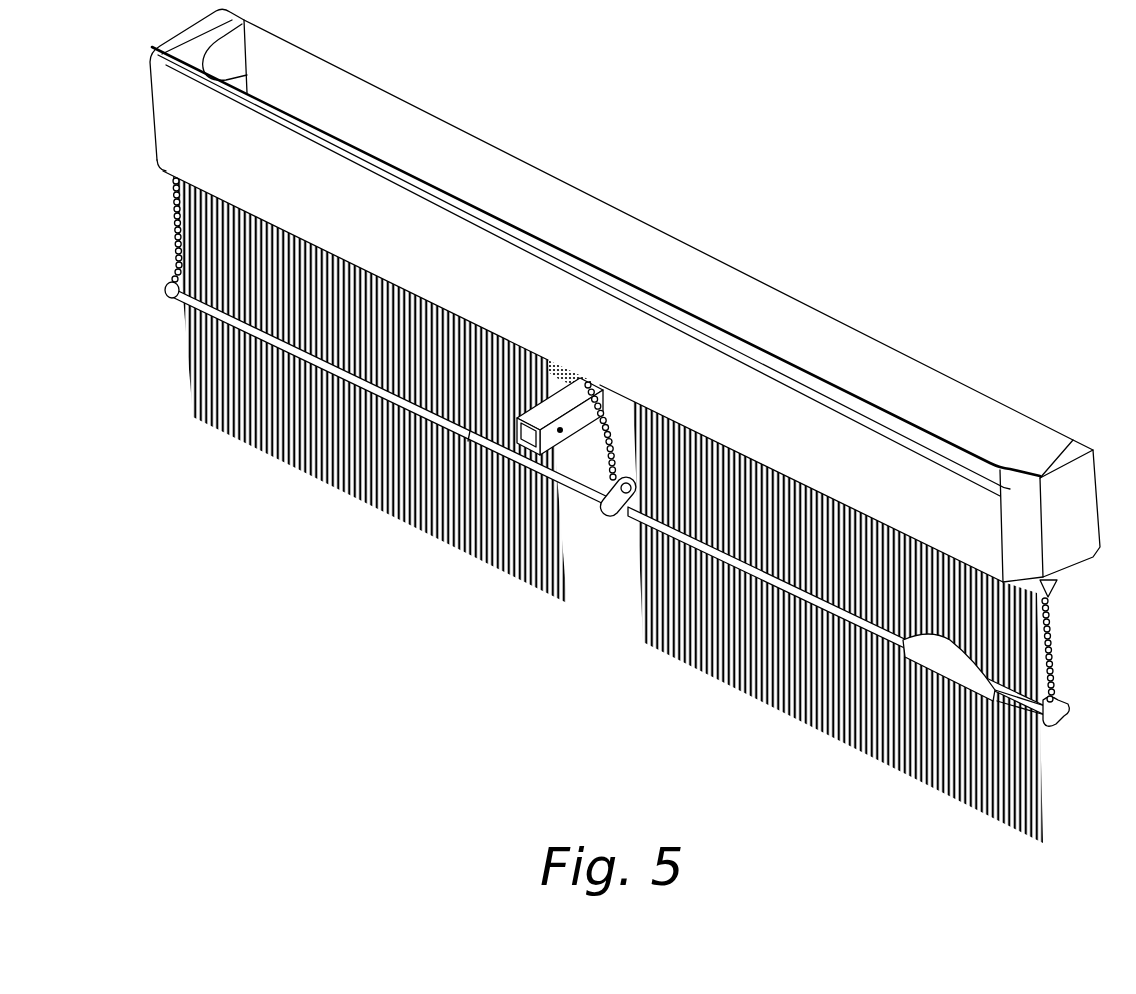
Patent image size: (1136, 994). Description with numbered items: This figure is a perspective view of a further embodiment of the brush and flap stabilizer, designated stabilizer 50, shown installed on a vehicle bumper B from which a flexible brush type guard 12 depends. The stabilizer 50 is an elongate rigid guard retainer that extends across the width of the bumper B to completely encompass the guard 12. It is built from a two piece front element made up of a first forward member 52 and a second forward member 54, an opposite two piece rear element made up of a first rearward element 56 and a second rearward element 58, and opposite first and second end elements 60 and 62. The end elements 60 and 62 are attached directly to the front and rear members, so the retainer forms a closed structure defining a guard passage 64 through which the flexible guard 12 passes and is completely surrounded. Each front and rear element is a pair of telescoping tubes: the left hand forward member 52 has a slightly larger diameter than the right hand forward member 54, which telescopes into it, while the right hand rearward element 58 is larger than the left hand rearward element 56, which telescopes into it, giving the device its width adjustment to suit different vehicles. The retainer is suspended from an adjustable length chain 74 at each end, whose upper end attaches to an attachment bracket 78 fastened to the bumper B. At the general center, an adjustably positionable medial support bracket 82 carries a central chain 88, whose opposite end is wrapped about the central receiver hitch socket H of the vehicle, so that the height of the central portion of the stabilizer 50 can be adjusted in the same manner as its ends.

The brush type guard 12 is at (530, 588).
The stabilizer assembly 50 is at (583, 522).
The first forward member 52 is at (580, 473).
The second forward member 54 is at (1052, 668).
The first rearward element 56 is at (380, 389).
The second rearward element 58 is at (866, 628).
The first end element 60 is at (595, 511).
The second end element 62 is at (1060, 722).
The guard passage 64 is at (633, 503).
The adjustable length chain 74 is at (172, 224).
The attachment bracket 78 is at (1058, 584).
The medial support bracket 82 is at (666, 499).
The central chain 88 is at (624, 398).
The bumper B is at (712, 325).
The central receiver hitch socket H is at (545, 405).